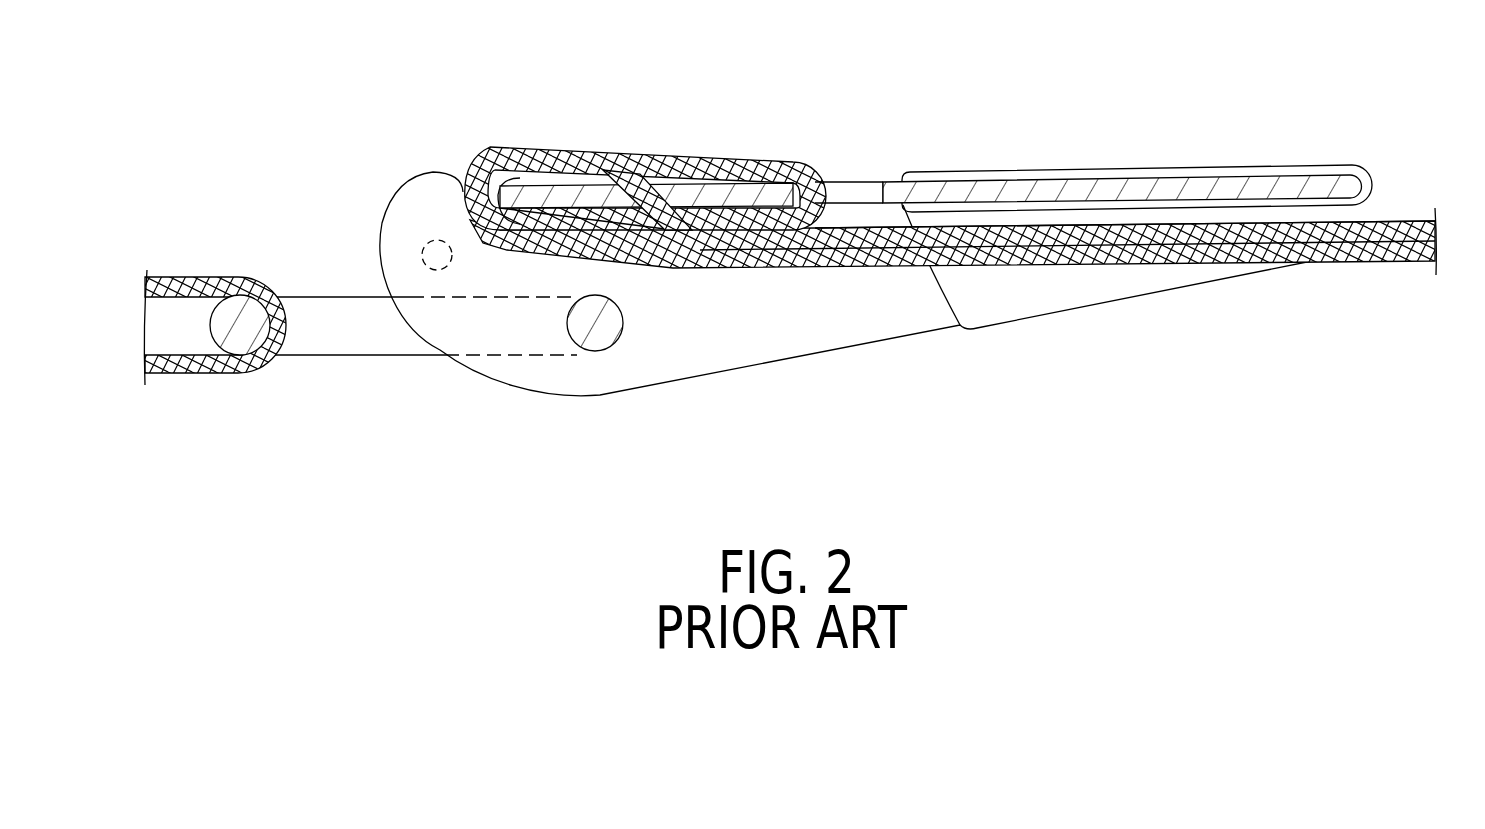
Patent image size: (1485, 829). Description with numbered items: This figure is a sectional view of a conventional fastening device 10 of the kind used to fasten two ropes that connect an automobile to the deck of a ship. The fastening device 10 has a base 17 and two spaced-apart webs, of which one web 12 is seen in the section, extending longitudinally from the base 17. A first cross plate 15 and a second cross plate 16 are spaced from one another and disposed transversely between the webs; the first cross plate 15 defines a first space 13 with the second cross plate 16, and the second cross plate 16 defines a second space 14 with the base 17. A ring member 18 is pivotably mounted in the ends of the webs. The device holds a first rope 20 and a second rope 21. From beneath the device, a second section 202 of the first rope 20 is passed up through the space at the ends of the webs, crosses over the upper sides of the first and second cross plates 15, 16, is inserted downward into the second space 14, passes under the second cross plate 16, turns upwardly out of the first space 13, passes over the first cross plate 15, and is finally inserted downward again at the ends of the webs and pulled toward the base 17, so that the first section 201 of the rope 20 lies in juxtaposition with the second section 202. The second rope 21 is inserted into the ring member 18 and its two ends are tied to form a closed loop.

The fastening device 10 is at (1272, 143).
The web 12 is at (410, 185).
The first space 13 is at (661, 192).
The second space 14 is at (852, 185).
The first cross plate 15 is at (552, 192).
The second cross plate 16 is at (762, 192).
The base 17 is at (985, 192).
The ring member 18 is at (332, 343).
The first rope 20 is at (710, 163).
The second rope 21 is at (193, 373).
The first section of the first rope 201 is at (1393, 230).
The second section of the first rope 202 is at (1332, 258).